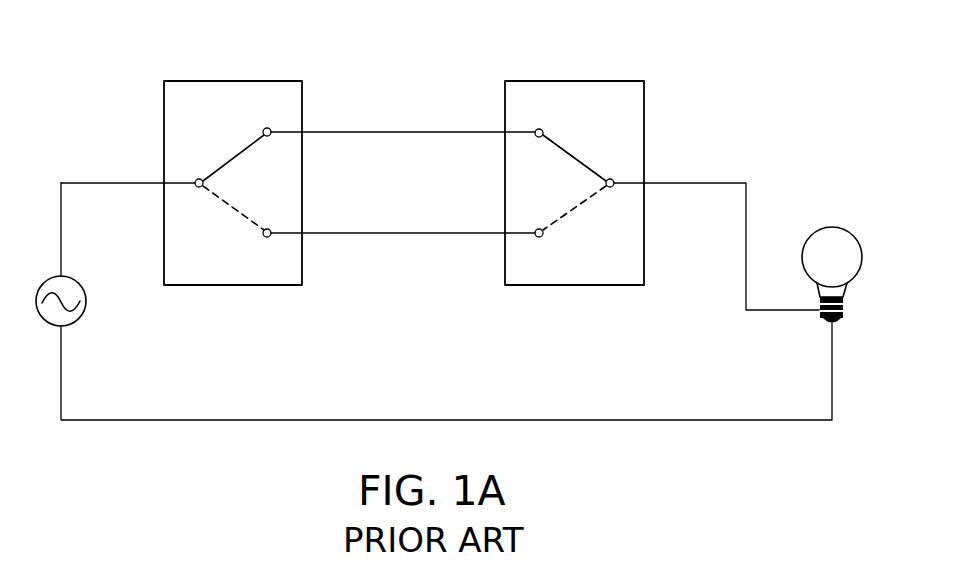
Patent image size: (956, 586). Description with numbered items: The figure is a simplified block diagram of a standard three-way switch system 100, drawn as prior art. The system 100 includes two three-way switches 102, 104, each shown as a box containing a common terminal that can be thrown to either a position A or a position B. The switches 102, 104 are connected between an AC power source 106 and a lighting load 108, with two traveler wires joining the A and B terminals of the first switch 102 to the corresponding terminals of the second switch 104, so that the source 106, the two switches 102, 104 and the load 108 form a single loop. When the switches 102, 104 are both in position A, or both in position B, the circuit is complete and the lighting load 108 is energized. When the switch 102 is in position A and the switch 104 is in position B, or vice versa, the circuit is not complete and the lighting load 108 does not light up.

The three-way switch system 100 is at (392, 87).
The three-way switch 102 is at (220, 81).
The three-way switch 104 is at (557, 81).
The AC power source 106 is at (77, 322).
The lighting load 108 is at (840, 226).